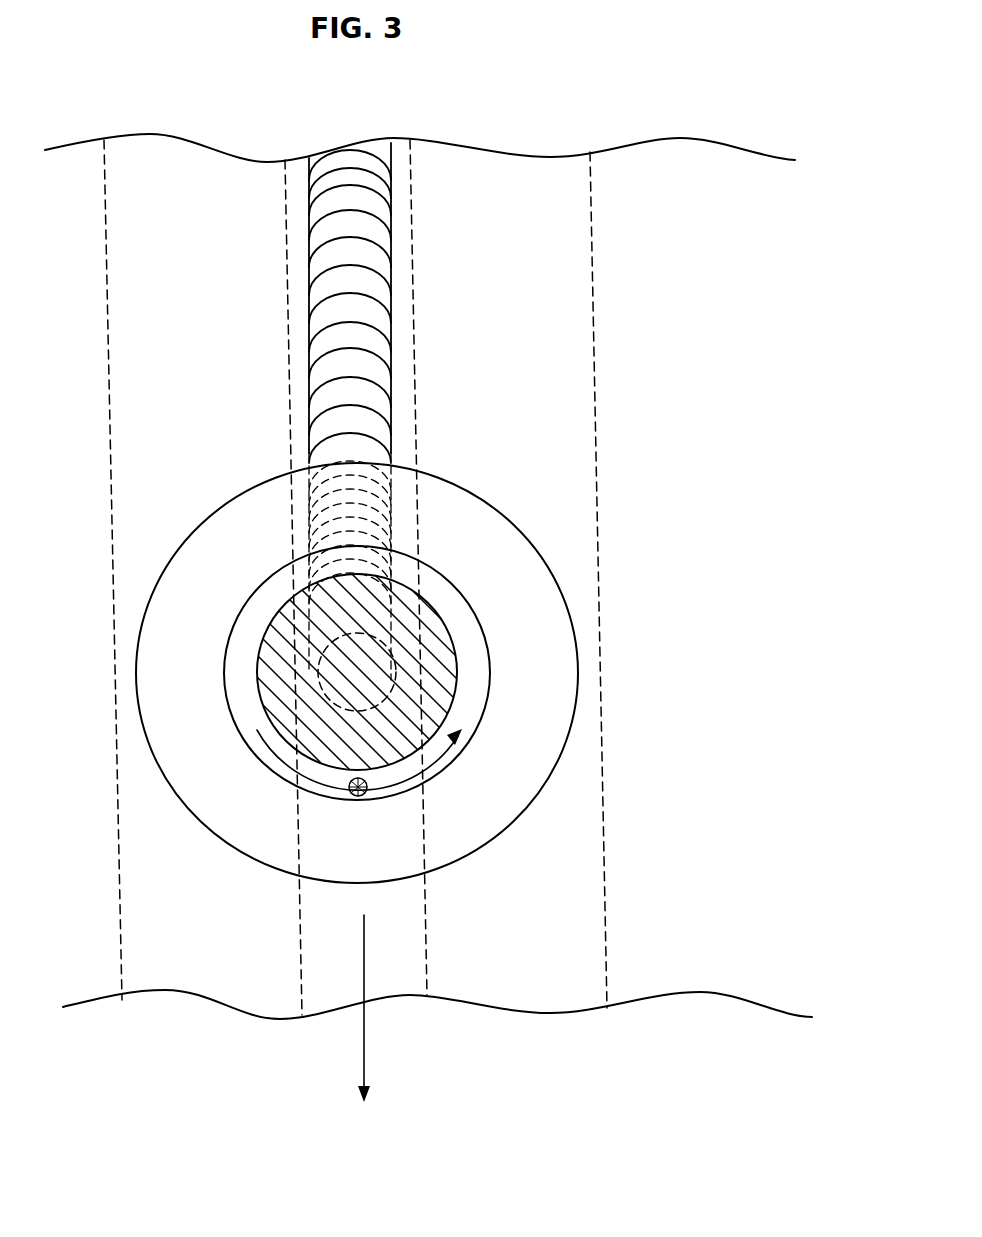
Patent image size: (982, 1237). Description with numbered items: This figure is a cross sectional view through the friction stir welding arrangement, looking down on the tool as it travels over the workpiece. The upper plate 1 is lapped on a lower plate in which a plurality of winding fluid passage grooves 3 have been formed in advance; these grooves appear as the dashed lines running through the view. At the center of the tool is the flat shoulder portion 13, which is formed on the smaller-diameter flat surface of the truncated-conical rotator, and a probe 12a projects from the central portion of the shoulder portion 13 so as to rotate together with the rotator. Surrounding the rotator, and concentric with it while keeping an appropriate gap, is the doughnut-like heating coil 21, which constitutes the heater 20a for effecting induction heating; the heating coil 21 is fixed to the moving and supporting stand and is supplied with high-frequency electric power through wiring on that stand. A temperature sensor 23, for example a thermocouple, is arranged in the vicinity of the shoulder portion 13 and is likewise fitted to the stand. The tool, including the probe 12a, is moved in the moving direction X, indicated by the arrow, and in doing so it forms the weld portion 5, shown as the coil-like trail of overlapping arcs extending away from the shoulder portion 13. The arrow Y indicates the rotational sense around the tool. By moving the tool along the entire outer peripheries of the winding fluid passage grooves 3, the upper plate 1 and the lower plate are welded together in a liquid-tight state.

The upper plate 1 is at (592, 405).
The fluid passage grooves 3 is at (145, 270).
The weld portion 5 is at (374, 282).
The shoulder portion 13 is at (410, 653).
The probe 12a is at (372, 677).
The heating coil 21 is at (533, 715).
The temperature sensor 23 is at (365, 793).
The heater 20a is at (627, 702).
The moving direction X is at (364, 1028).
The rotation direction Y is at (437, 763).